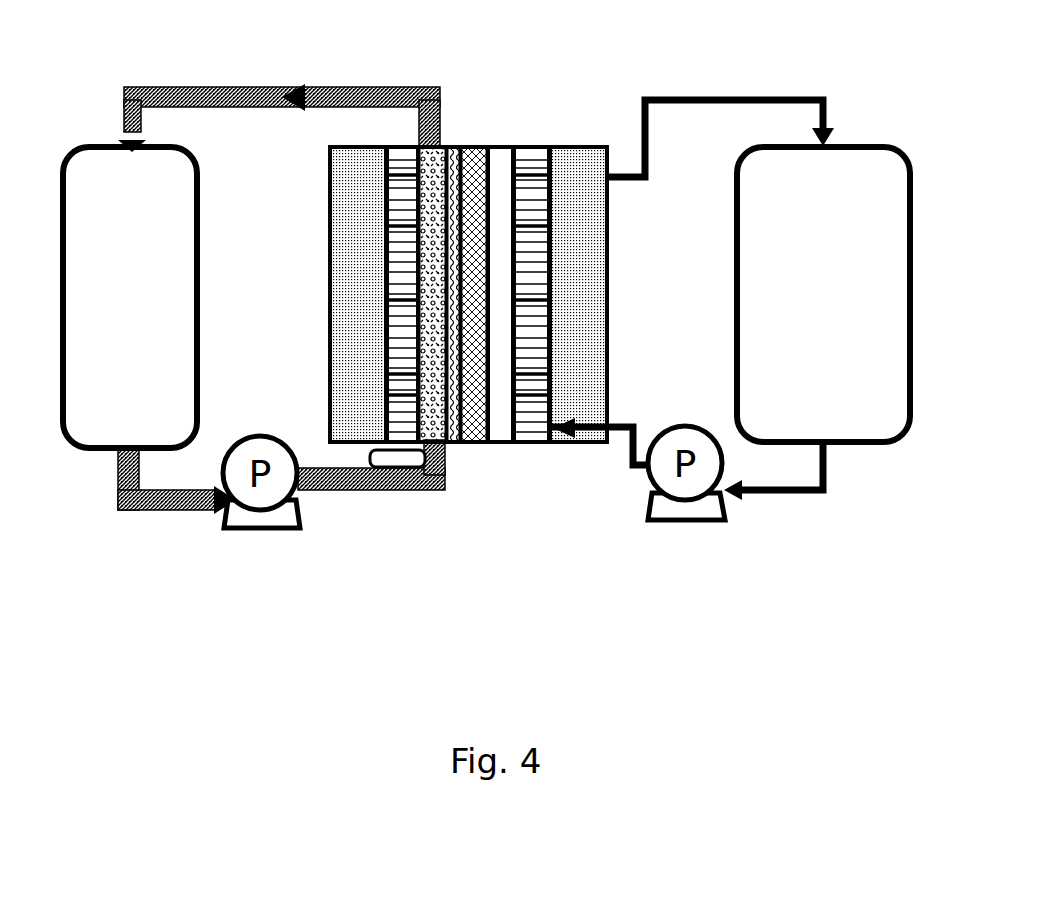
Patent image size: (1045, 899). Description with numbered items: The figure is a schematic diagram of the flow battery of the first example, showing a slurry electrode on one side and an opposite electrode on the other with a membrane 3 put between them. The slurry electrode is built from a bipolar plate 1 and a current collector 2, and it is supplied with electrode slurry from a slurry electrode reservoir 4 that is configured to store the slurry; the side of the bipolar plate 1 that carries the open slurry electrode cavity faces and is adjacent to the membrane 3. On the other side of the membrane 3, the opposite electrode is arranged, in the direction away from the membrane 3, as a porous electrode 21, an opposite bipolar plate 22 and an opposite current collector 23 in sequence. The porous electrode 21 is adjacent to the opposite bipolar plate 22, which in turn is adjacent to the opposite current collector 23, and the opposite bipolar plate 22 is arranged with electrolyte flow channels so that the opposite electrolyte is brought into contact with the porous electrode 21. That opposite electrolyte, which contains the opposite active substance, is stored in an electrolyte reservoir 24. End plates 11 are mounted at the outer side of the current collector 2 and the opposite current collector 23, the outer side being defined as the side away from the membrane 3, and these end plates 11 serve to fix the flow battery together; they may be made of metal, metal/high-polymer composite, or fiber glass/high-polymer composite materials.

The bipolar plate 1 is at (397, 492).
The current collector 2 is at (394, 157).
The membrane 3 is at (455, 444).
The slurry electrode reservoir 4 is at (130, 297).
The end plates 11 is at (344, 190).
The porous electrode 21 is at (472, 444).
The opposite bipolar plate 22 is at (502, 160).
The opposite current collector 23 is at (540, 134).
The electrolyte reservoir 24 is at (823, 294).